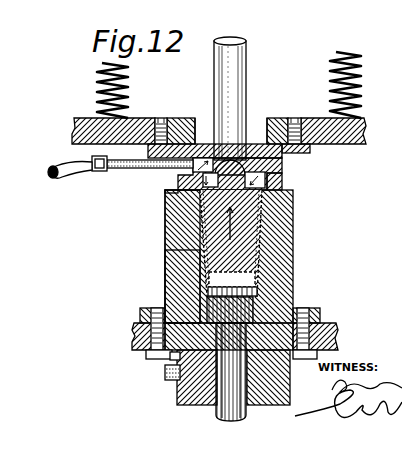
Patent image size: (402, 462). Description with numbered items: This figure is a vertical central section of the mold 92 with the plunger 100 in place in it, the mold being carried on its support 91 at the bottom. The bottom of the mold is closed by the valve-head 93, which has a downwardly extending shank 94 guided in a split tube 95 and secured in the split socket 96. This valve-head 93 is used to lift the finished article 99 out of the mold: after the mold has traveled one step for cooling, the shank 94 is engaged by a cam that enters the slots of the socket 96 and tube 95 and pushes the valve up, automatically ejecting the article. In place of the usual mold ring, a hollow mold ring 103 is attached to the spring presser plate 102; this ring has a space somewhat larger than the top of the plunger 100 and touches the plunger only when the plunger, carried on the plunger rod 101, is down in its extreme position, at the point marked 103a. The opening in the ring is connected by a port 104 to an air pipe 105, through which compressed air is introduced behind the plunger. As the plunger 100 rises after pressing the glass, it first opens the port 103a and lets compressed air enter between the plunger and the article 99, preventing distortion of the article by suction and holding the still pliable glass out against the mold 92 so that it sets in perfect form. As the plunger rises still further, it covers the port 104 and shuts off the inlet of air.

The base plate 91 is at (132, 328).
The mold 92 is at (283, 228).
The valve-head 93 is at (167, 298).
The shank 94 is at (183, 395).
The split tube 95 is at (170, 366).
The split socket 96 is at (177, 360).
The article 99 is at (192, 255).
The plunger 100 is at (260, 258).
The plunger rod 101 is at (234, 60).
The spring presser plate 102 is at (321, 118).
The hollow mold ring 103 is at (282, 162).
The port 103a is at (268, 198).
The port 104 is at (168, 190).
The air pipe 105 is at (80, 173).